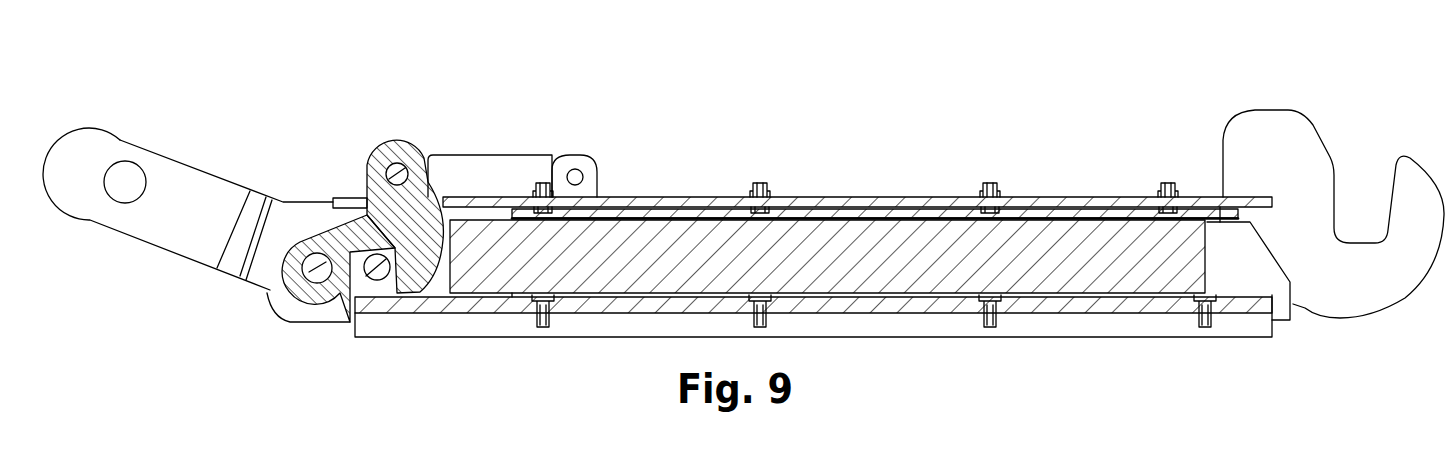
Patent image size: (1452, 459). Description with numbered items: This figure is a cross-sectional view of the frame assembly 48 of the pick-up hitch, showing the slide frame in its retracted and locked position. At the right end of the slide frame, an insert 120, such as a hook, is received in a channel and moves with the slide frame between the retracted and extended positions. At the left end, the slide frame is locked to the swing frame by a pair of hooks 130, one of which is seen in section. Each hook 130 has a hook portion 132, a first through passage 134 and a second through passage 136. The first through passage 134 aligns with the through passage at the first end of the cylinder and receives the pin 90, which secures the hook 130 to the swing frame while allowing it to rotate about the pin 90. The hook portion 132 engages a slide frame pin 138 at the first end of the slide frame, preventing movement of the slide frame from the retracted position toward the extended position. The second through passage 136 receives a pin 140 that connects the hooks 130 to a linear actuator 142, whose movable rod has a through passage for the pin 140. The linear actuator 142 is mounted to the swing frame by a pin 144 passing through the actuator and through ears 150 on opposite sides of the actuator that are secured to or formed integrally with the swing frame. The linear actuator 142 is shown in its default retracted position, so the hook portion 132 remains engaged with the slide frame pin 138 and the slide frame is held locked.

The frame assembly 48 is at (1272, 36).
The pin 90 is at (313, 262).
The insert 120 is at (1345, 288).
The hook 130 is at (389, 130).
The hook portion 132 is at (412, 280).
The first through passage 134 is at (315, 267).
The second through passage 136 is at (408, 168).
The slide frame pin 138 is at (382, 272).
The pin 140 is at (367, 157).
The linear actuator 142 is at (536, 128).
The pin 144 is at (582, 174).
The ears 150 is at (587, 155).